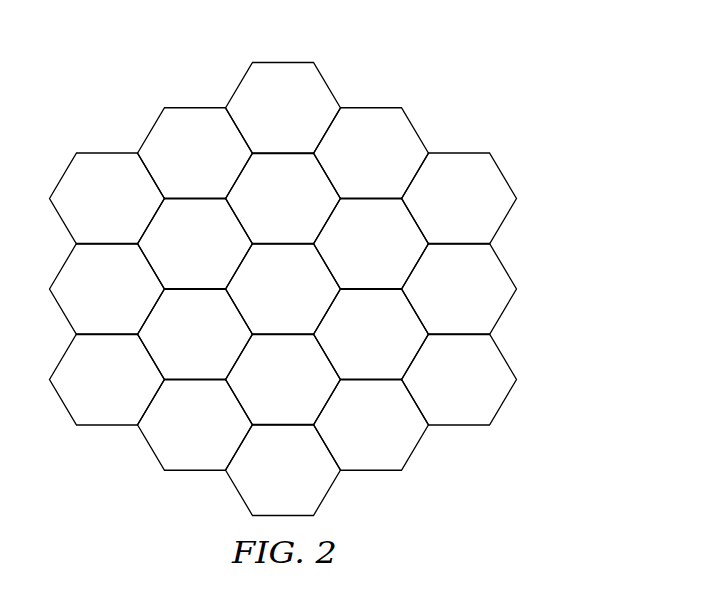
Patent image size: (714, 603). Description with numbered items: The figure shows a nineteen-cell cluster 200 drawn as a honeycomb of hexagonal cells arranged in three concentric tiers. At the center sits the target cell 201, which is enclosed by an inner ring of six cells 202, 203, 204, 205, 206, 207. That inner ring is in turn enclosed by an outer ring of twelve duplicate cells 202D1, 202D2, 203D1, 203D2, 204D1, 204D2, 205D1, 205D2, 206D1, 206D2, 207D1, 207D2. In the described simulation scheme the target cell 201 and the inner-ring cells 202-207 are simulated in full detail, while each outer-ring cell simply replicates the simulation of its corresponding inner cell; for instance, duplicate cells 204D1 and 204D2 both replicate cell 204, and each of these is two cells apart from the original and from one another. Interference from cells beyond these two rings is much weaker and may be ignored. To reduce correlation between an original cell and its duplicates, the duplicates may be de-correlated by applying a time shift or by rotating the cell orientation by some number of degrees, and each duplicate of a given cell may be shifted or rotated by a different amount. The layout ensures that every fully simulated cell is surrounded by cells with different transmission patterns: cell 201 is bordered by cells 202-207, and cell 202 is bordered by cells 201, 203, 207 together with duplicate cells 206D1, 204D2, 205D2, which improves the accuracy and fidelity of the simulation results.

The cluster 200 is at (343, 289).
The target cell 201 is at (264, 300).
The cell 202 is at (176, 255).
The cell 203 is at (176, 345).
The cell 204 is at (264, 390).
The cell 205 is at (352, 345).
The cell 206 is at (352, 255).
The cell 207 is at (264, 210).
The duplicate cell 202D1 is at (426, 210).
The duplicate cell 202D2 is at (338, 436).
The duplicate cell 203D1 is at (250, 119).
The duplicate cell 203D2 is at (426, 300).
The duplicate cell 204D1 is at (338, 164).
The duplicate cell 204D2 is at (74, 210).
The duplicate cell 205D1 is at (162, 164).
The duplicate cell 205D2 is at (74, 390).
The duplicate cell 206D1 is at (74, 300).
The duplicate cell 206D2 is at (250, 481).
The duplicate cell 207D1 is at (162, 436).
The duplicate cell 207D2 is at (426, 390).